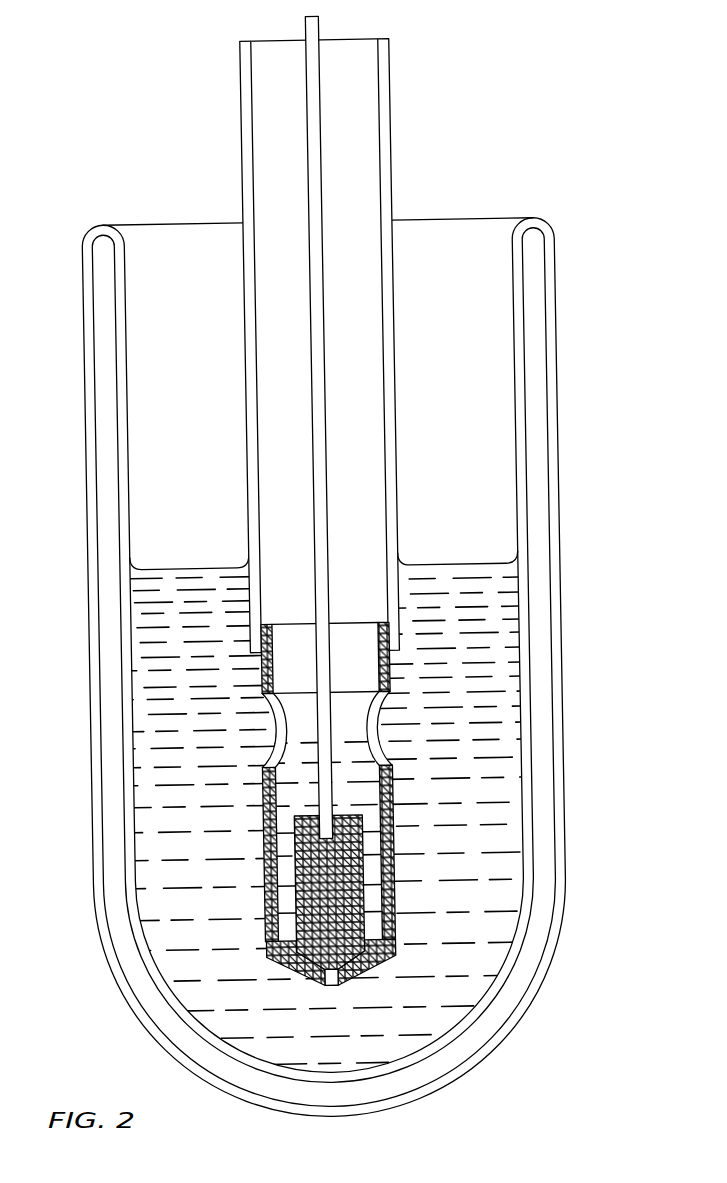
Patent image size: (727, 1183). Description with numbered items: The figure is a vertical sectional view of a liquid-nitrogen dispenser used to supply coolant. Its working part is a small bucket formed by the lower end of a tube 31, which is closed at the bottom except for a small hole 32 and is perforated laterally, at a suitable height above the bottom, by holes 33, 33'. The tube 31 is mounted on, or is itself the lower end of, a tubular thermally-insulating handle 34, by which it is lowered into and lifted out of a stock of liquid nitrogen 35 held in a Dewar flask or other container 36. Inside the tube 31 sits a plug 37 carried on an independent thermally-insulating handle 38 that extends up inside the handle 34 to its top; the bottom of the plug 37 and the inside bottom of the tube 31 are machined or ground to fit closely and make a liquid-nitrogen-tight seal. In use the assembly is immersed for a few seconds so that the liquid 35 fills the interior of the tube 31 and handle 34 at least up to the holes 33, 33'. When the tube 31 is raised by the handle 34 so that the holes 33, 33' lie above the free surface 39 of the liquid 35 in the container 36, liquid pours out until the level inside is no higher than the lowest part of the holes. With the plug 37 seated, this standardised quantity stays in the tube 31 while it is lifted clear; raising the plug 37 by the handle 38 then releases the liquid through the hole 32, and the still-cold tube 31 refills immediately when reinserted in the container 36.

The tube 31 is at (379, 829).
The small hole 32 is at (314, 992).
The lateral hole 33 is at (364, 694).
The lateral hole 33' is at (236, 696).
The thermally-insulating handle 34 is at (388, 157).
The liquid nitrogen 35 is at (483, 879).
The container 36 is at (515, 396).
The plug 37 is at (352, 918).
The thermally-insulating handle 38 is at (319, 37).
The free surface 39 is at (423, 571).